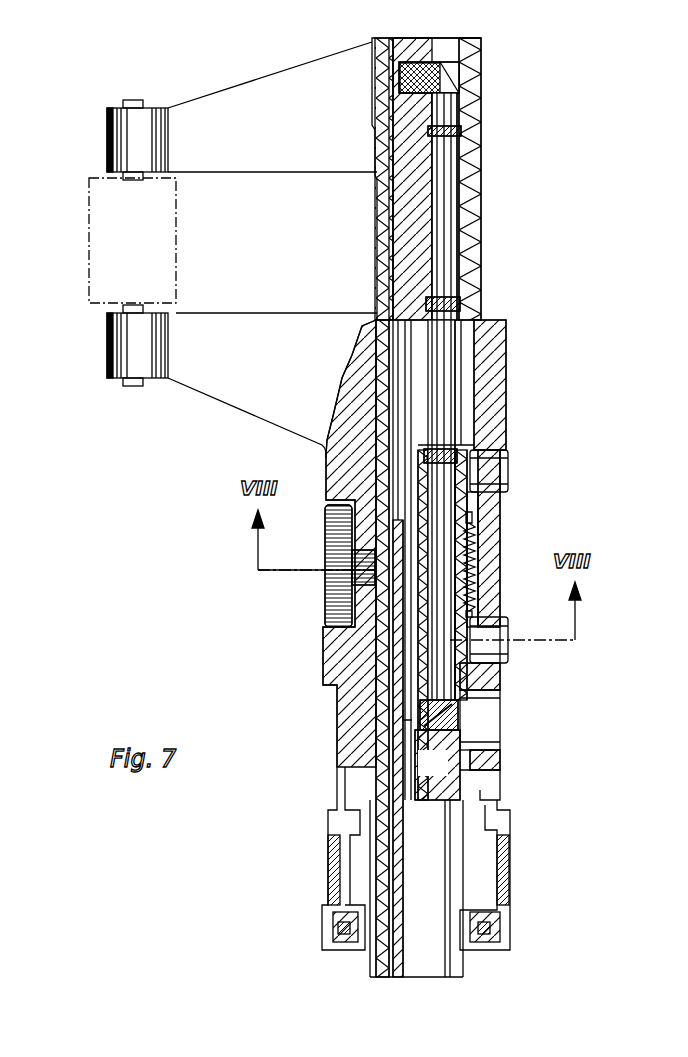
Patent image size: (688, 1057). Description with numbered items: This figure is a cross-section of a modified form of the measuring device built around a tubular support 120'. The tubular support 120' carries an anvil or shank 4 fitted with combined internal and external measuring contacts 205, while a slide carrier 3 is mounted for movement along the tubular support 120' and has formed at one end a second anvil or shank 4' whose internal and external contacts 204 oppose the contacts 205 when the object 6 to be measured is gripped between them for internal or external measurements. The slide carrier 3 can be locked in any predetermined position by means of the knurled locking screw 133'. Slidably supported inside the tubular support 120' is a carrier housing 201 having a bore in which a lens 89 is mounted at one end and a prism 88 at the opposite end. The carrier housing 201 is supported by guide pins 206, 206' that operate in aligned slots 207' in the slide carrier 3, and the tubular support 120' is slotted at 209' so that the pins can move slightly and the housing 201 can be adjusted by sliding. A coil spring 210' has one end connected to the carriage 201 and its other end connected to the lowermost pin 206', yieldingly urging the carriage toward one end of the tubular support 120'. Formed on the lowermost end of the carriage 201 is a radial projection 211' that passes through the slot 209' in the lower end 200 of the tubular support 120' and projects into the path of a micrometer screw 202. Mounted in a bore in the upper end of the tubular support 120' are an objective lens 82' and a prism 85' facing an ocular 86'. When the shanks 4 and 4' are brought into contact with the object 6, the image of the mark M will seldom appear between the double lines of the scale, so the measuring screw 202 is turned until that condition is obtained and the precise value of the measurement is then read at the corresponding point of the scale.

The anvil or shank 4 is at (272, 107).
The anvil or shank 4' is at (268, 385).
The combined internal and external measuring contacts 205 is at (107, 175).
The internal and external contacts 204 is at (105, 305).
The object 6 is at (92, 230).
The slide carrier 3 is at (345, 458).
The ocular 86' is at (437, 24).
The prism 85' is at (462, 77).
The tubular support 120' is at (465, 179).
The objective lens 82' is at (479, 298).
The slot 209' is at (517, 385).
The lens 89 is at (436, 446).
The guide pin 206 is at (522, 471).
The coil spring 210' is at (515, 538).
The guide pin 206' is at (512, 625).
The aligned slots 207' is at (515, 706).
The knurled locking screw 133' is at (322, 566).
The carrier housing 201 is at (420, 660).
The mark M is at (400, 714).
The prism 88 is at (426, 730).
The radial projection 211' is at (513, 775).
The tube 200 is at (440, 838).
The micrometer screw 202 is at (328, 874).